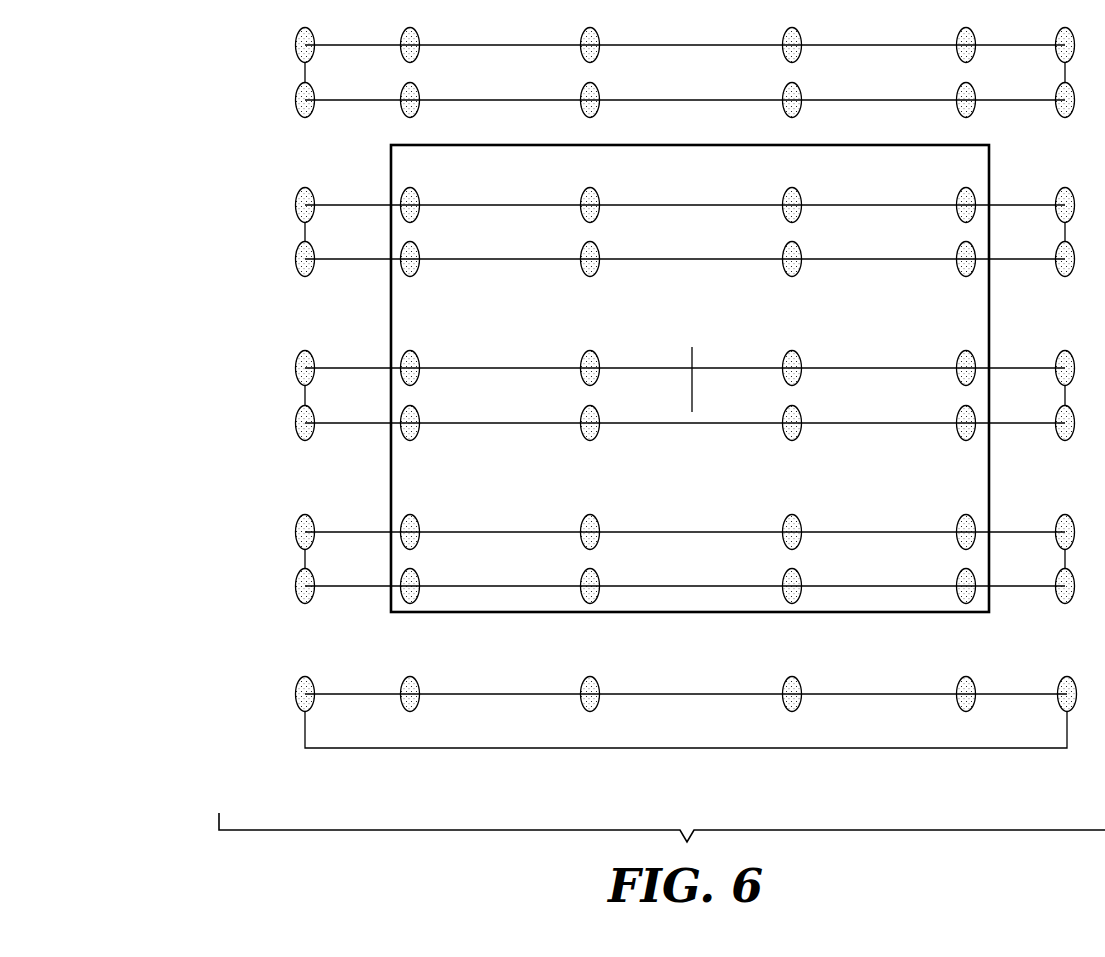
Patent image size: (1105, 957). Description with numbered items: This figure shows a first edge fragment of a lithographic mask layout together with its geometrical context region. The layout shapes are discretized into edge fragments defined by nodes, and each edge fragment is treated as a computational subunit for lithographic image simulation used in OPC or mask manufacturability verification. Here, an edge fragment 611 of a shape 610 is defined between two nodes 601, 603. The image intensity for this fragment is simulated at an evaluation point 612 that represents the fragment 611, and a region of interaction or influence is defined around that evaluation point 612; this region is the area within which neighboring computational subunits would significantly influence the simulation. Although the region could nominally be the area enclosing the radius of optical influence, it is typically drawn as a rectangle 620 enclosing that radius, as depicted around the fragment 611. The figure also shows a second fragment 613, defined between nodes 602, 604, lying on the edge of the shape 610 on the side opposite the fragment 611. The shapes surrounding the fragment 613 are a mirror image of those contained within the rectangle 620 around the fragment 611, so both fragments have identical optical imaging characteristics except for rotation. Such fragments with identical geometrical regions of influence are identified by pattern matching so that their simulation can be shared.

The node 601 is at (590, 350).
The node 602 is at (590, 441).
The node 603 is at (792, 350).
The node 604 is at (792, 441).
The shape 610 is at (305, 396).
The edge fragment 611 is at (655, 368).
The evaluation point 612 is at (696, 357).
The fragment 613 is at (722, 423).
The rectangle 620 is at (390, 306).